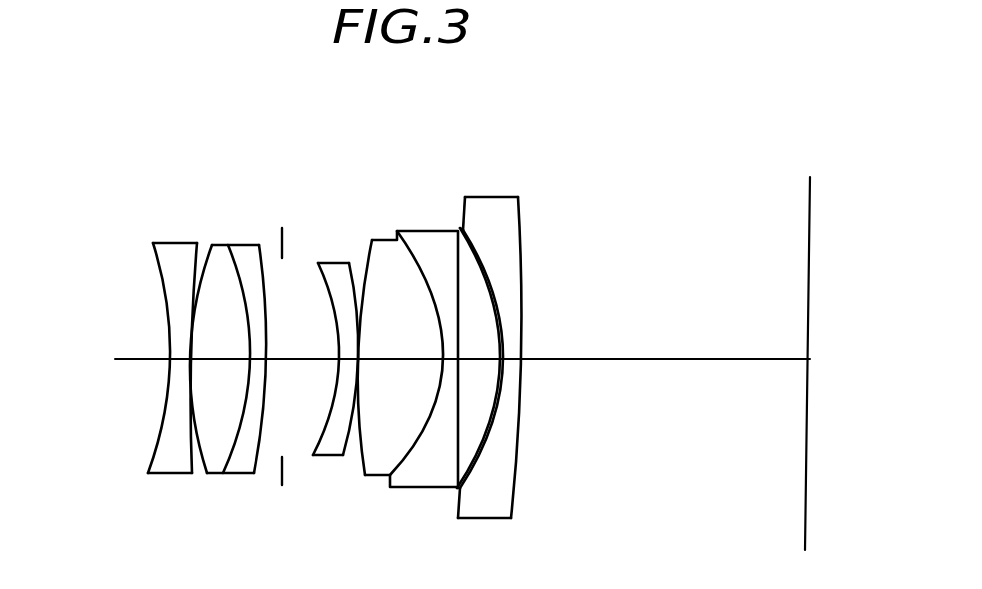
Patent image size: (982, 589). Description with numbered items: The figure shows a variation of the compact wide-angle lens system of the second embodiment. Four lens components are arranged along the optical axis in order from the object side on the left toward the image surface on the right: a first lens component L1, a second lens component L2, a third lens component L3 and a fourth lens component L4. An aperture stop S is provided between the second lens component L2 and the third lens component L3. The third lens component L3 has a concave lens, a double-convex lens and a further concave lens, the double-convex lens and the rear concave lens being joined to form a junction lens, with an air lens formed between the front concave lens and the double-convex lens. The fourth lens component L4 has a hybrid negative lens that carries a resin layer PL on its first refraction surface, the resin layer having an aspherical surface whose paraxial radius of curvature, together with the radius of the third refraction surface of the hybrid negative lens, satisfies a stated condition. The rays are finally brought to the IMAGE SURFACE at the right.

The first lens component L1 is at (197, 228).
The second lens component L2 is at (257, 487).
The aperture stop S is at (284, 240).
The third lens component L3 is at (450, 502).
The resin layer PL is at (515, 334).
The fourth lens component L4 is at (520, 307).
The image surface IMAGE SURFACE is at (777, 338).